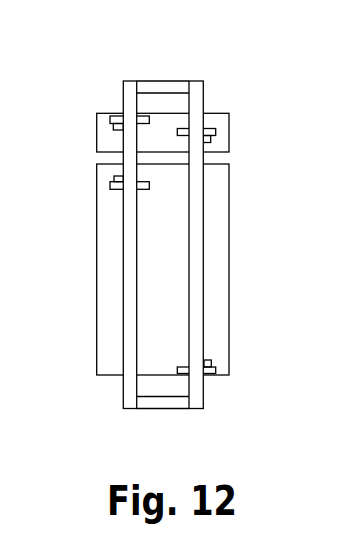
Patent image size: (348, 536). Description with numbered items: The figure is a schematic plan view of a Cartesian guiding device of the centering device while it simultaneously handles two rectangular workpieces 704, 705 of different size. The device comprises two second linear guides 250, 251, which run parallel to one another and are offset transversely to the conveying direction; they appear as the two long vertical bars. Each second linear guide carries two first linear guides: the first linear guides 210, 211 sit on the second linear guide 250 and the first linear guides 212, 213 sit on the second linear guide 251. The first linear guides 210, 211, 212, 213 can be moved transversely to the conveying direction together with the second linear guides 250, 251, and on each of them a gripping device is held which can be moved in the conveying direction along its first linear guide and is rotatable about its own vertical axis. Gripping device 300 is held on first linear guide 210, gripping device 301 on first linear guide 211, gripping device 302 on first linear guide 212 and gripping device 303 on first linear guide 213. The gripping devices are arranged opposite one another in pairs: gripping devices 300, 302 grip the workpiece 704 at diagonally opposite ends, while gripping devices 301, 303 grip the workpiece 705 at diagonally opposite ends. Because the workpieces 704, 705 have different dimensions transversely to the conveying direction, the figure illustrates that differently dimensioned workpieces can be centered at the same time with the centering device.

The second linear guide 250 is at (129, 87).
The second linear guide 251 is at (196, 88).
The workpiece 705 is at (108, 112).
The workpiece 704 is at (107, 267).
The first linear guide 211 is at (112, 117).
The first linear guide 213 is at (214, 133).
The first linear guide 210 is at (112, 183).
The first linear guide 212 is at (216, 373).
The gripping device 301 is at (113, 125).
The gripping device 303 is at (211, 142).
The gripping device 300 is at (122, 190).
The gripping device 302 is at (205, 375).